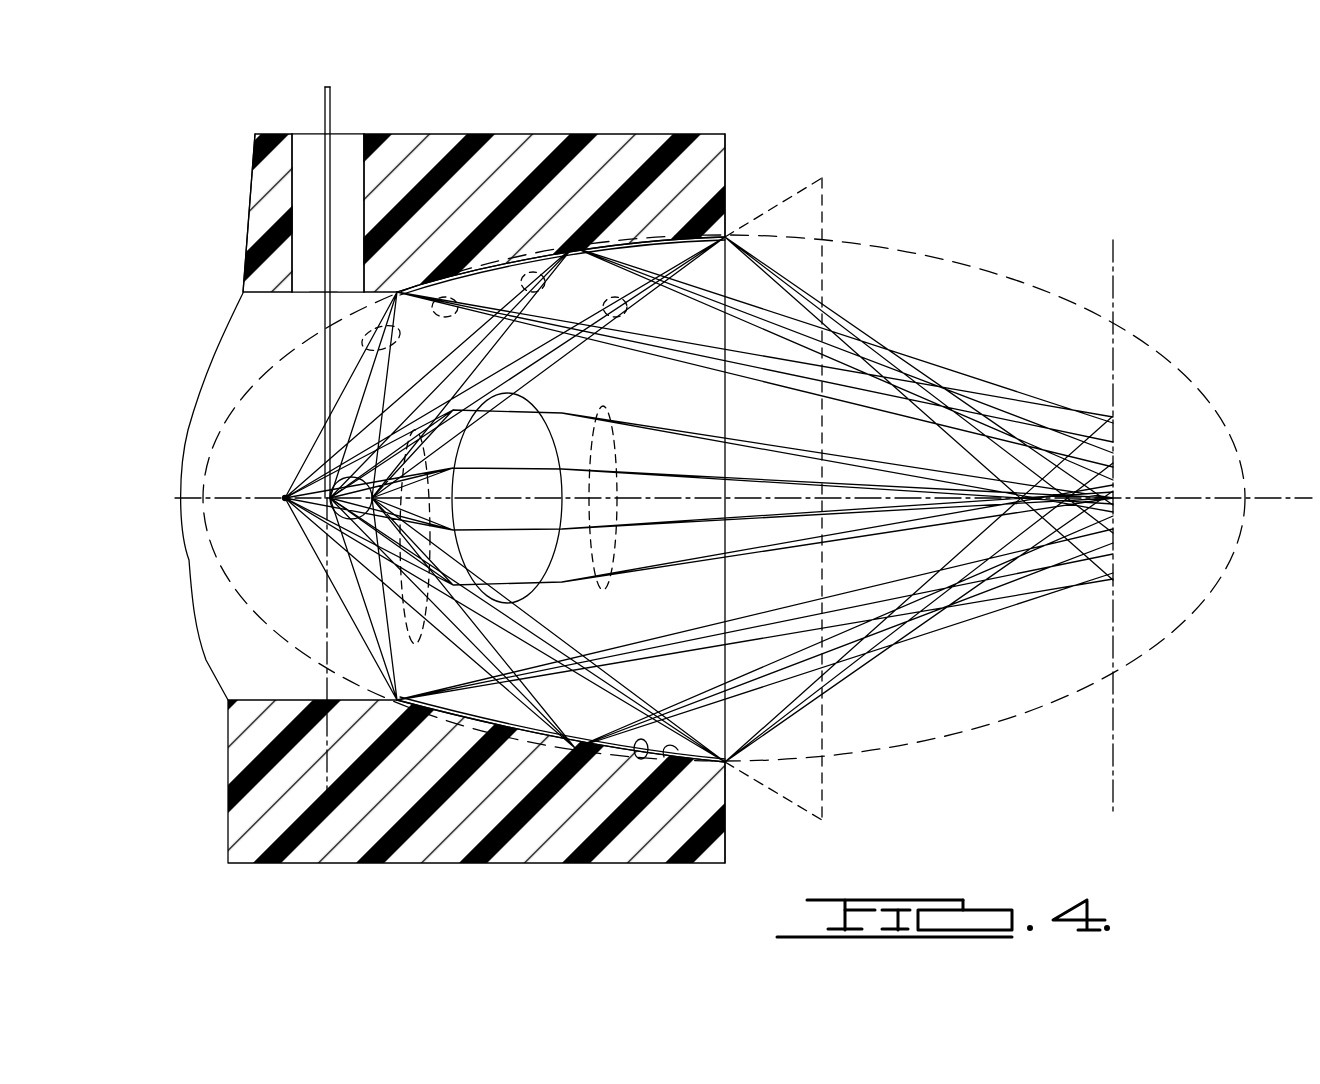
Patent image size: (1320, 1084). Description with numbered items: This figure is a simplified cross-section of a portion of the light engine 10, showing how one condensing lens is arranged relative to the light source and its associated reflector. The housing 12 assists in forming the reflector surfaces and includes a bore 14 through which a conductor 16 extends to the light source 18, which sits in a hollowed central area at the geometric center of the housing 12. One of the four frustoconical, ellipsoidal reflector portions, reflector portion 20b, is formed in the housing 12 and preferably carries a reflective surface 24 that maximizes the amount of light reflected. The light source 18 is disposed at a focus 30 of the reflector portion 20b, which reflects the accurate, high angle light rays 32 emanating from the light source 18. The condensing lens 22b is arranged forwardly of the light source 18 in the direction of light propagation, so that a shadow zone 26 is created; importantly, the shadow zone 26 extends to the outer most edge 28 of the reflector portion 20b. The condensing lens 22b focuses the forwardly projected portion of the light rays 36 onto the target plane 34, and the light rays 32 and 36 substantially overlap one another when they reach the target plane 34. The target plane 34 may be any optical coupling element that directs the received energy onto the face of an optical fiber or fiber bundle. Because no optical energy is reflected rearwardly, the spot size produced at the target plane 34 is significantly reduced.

The light engine 10 is at (155, 247).
The housing 12 is at (507, 147).
The bore 14 is at (364, 150).
The conductor 16 is at (325, 97).
The light source 18 is at (283, 490).
The reflector portion 20b is at (726, 766).
The condensing lens 22b is at (523, 590).
The reflective surface 24 is at (612, 848).
The shadow zone 26 is at (843, 782).
The outer most edge 28 is at (727, 236).
The focus 30 is at (327, 697).
The high angle light rays 32 is at (438, 322).
The target plane 34 is at (1113, 287).
The light rays 36 is at (426, 640).